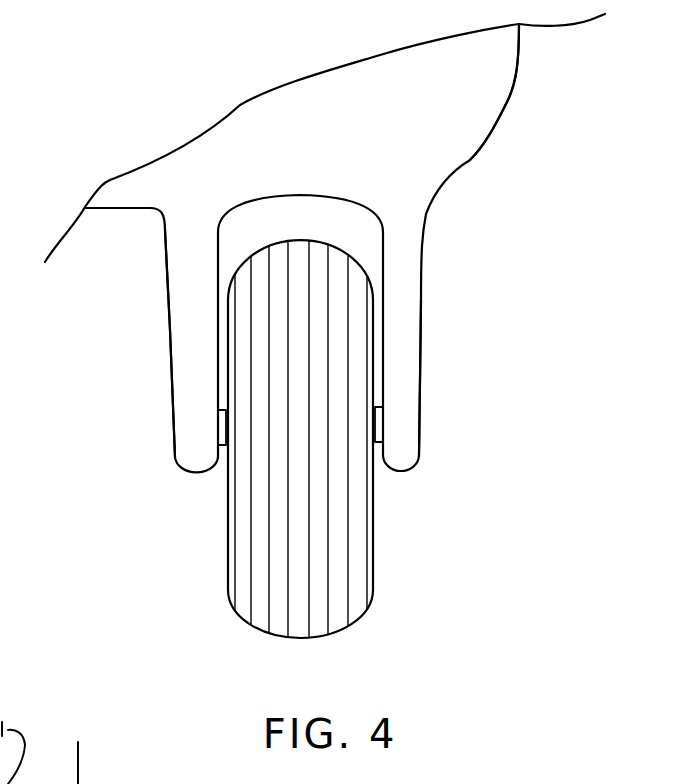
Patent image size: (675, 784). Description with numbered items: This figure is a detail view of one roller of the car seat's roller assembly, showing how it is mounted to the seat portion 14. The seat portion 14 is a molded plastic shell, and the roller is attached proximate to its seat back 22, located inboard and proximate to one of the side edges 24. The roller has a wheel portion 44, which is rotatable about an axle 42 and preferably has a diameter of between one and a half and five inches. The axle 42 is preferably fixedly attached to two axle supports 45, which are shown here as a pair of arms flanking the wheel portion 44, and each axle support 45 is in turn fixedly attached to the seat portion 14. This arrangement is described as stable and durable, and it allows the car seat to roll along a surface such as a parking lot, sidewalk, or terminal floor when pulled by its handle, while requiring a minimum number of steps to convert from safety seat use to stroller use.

The seat portion 14 is at (488, 147).
The seat back 22 is at (370, 140).
The side edges 24 is at (517, 72).
The axle 42 is at (222, 432).
The wheel portion 44 is at (360, 558).
The axle support 45 is at (183, 330).